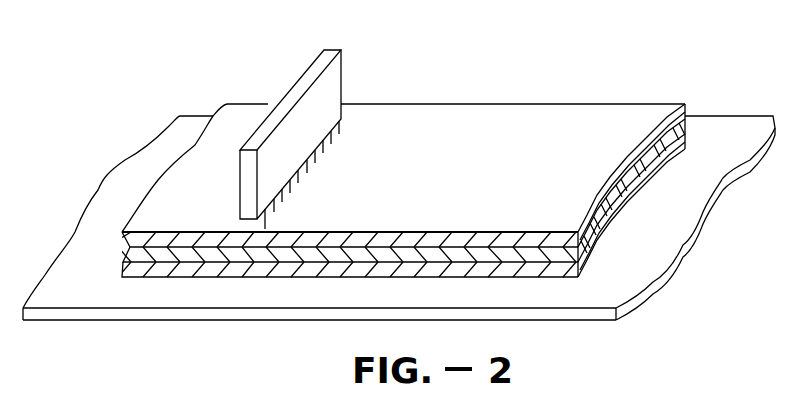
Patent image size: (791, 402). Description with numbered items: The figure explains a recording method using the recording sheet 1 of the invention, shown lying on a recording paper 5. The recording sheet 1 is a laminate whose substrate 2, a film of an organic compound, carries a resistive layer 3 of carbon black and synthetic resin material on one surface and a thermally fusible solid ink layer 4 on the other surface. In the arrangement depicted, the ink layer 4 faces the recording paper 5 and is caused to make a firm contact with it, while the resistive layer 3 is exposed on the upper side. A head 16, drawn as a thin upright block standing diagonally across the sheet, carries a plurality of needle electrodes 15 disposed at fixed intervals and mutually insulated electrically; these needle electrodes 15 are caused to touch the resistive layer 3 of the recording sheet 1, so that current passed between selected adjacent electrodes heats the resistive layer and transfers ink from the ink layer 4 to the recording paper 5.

The recording sheet 1 is at (612, 82).
The substrate 2 is at (453, 252).
The resistive layer 3 is at (512, 237).
The thermally fusible solid ink layer 4 is at (453, 266).
The recording paper 5 is at (712, 128).
The needle electrodes 15 is at (287, 175).
The head 16 is at (301, 95).